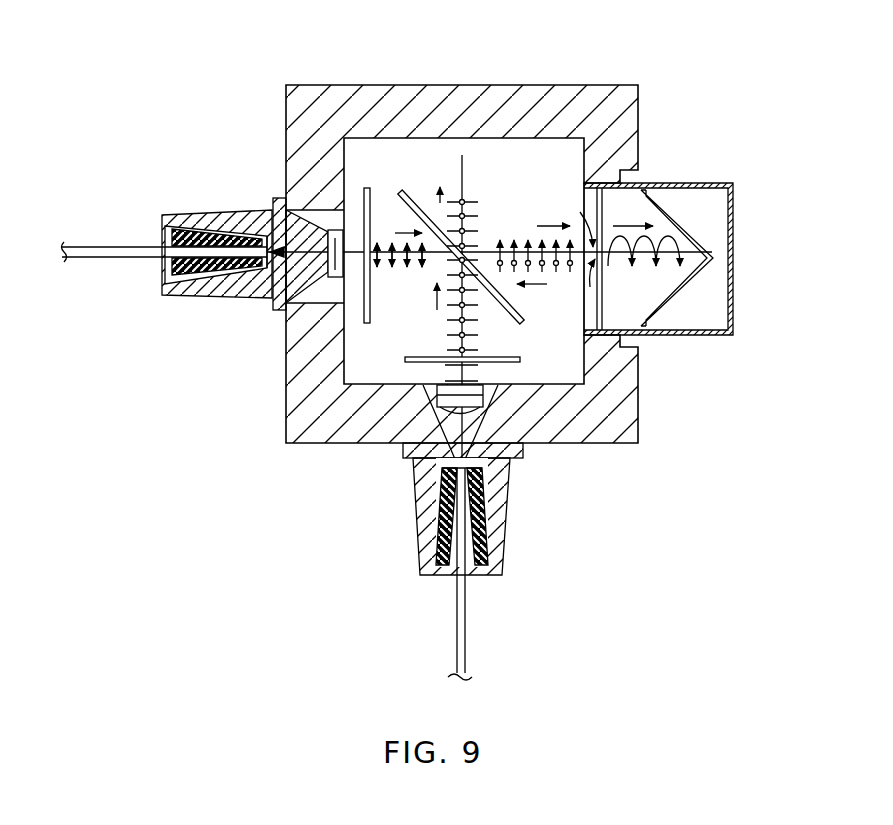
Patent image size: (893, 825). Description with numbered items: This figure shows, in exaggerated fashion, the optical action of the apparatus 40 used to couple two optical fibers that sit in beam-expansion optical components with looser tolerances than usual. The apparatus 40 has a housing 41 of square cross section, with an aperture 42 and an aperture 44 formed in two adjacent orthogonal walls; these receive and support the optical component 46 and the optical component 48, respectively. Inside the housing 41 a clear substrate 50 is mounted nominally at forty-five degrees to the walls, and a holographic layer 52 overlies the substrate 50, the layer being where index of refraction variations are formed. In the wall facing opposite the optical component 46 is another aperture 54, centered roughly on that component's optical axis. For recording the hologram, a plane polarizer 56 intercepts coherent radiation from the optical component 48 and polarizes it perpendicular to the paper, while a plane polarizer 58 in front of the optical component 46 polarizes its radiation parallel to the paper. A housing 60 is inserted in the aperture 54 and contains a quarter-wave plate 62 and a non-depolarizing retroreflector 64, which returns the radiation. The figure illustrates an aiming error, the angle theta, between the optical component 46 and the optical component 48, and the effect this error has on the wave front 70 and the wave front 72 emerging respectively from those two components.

The apparatus 40 is at (507, 72).
The housing 41 is at (583, 85).
The aperture 42 is at (346, 222).
The aperture 44 is at (523, 444).
The optical component 46 is at (233, 205).
The optical component 48 is at (510, 508).
The clear substrate 50 is at (481, 272).
The holographic layer 52 is at (523, 311).
The aperture 54 is at (587, 195).
The plane polarizer 56 is at (520, 363).
The plane polarizer 58 is at (370, 297).
The housing 60 is at (658, 241).
The quarter-wave plate 62 is at (603, 213).
The non-depolarizing retroreflector 64 is at (670, 215).
The wave front 70 is at (390, 243).
The wave front 72 is at (467, 202).